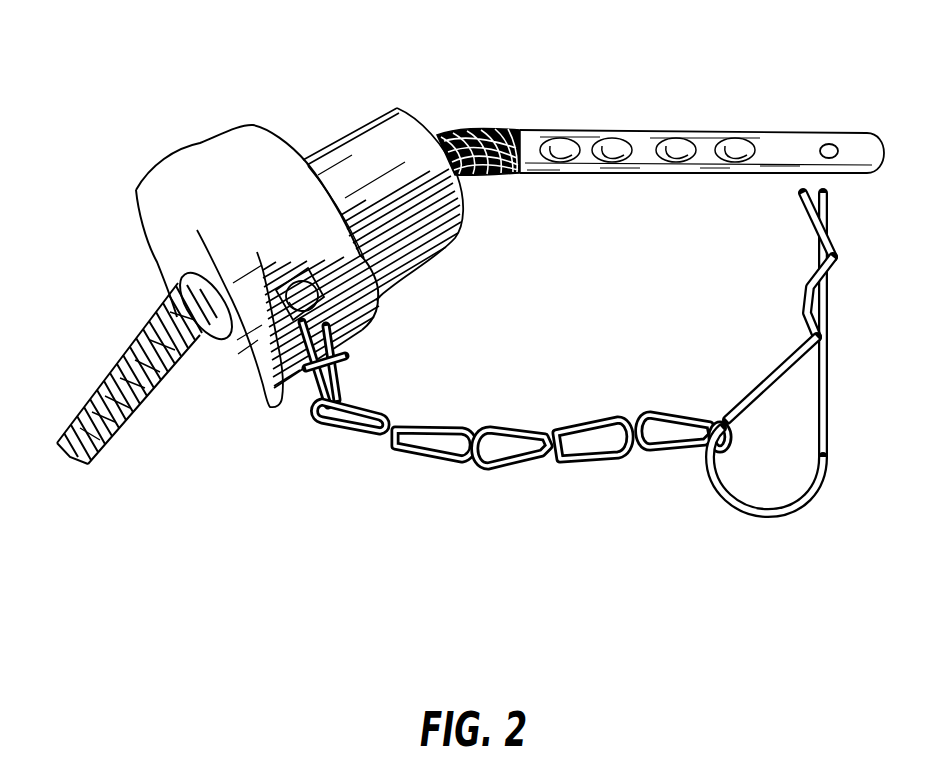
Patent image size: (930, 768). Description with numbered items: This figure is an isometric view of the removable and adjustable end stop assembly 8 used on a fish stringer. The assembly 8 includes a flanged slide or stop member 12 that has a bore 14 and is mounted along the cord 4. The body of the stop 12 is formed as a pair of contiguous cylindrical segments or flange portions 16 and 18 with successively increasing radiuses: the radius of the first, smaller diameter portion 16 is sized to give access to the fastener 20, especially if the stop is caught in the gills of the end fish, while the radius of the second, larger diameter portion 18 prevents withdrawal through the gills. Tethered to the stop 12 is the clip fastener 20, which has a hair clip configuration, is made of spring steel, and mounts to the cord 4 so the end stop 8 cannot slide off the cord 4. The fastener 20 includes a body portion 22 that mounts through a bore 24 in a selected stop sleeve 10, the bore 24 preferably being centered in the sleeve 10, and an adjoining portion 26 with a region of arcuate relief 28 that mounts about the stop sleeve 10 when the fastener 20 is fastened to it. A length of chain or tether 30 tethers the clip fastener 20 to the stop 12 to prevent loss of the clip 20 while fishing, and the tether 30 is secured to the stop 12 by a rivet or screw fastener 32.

The cord 4 is at (112, 372).
The end stop assembly 8 is at (397, 109).
The stop sleeve 10 is at (705, 130).
The stop member 12 is at (134, 212).
The bore 14 is at (196, 347).
The first flange portion 16 is at (382, 110).
The second flange portion 18 is at (215, 140).
The clip fastener 20 is at (762, 514).
The body portion 22 is at (802, 378).
The bore 24 is at (829, 145).
The adjoining portion 26 is at (812, 224).
The region of arcuate relief 28 is at (802, 294).
The tether 30 is at (410, 465).
The screw fastener 32 is at (324, 298).